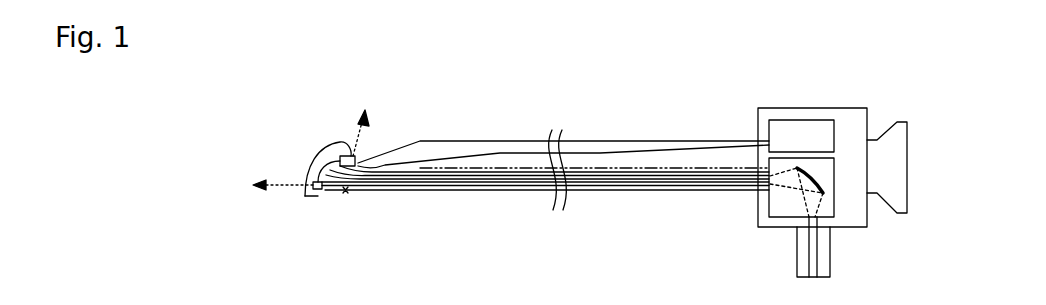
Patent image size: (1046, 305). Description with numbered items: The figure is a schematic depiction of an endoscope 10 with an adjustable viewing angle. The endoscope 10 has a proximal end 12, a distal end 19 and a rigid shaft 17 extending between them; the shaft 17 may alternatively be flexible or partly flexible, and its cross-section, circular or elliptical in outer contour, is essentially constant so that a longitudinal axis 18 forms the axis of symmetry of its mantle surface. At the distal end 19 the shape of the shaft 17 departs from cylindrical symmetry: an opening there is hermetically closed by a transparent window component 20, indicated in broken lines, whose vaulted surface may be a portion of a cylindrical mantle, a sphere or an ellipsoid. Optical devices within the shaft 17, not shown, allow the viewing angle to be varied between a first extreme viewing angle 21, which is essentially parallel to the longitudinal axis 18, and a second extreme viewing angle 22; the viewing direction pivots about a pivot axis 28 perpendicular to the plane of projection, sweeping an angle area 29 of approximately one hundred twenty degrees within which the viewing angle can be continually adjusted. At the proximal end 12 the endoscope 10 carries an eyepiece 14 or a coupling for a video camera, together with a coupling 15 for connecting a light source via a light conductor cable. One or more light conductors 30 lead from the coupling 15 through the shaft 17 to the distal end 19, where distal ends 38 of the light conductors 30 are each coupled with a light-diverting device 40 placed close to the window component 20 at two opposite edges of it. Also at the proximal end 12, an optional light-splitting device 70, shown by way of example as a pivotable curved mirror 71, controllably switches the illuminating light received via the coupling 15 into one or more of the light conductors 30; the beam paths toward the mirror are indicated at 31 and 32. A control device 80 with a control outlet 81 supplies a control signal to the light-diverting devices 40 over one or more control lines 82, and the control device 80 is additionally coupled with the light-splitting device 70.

The endoscope 10 is at (500, 78).
The proximal end 12 is at (762, 80).
The eyepiece 14 is at (887, 132).
The coupling 15 is at (798, 268).
The rigid shaft 17 is at (638, 191).
The longitudinal axis 18 is at (490, 165).
The distal end 19 is at (342, 221).
The transparent window component 20 is at (313, 191).
The first extreme viewing angle 21 is at (266, 192).
The second extreme viewing angle 22 is at (368, 122).
The pivot axis 28 is at (348, 191).
The angle area 29 is at (307, 157).
The light conductors 30 is at (525, 187).
The second light beam 31 is at (777, 187).
The first light beam 32 is at (768, 182).
The distal ends of the light conductors 38 is at (327, 193).
The light-diverting device 40 is at (345, 157).
The light-splitting device 70 is at (832, 178).
The curved mirror 71 is at (832, 194).
The control device 80 is at (823, 120).
The control outlet 81 is at (768, 150).
The control lines 82 is at (651, 153).